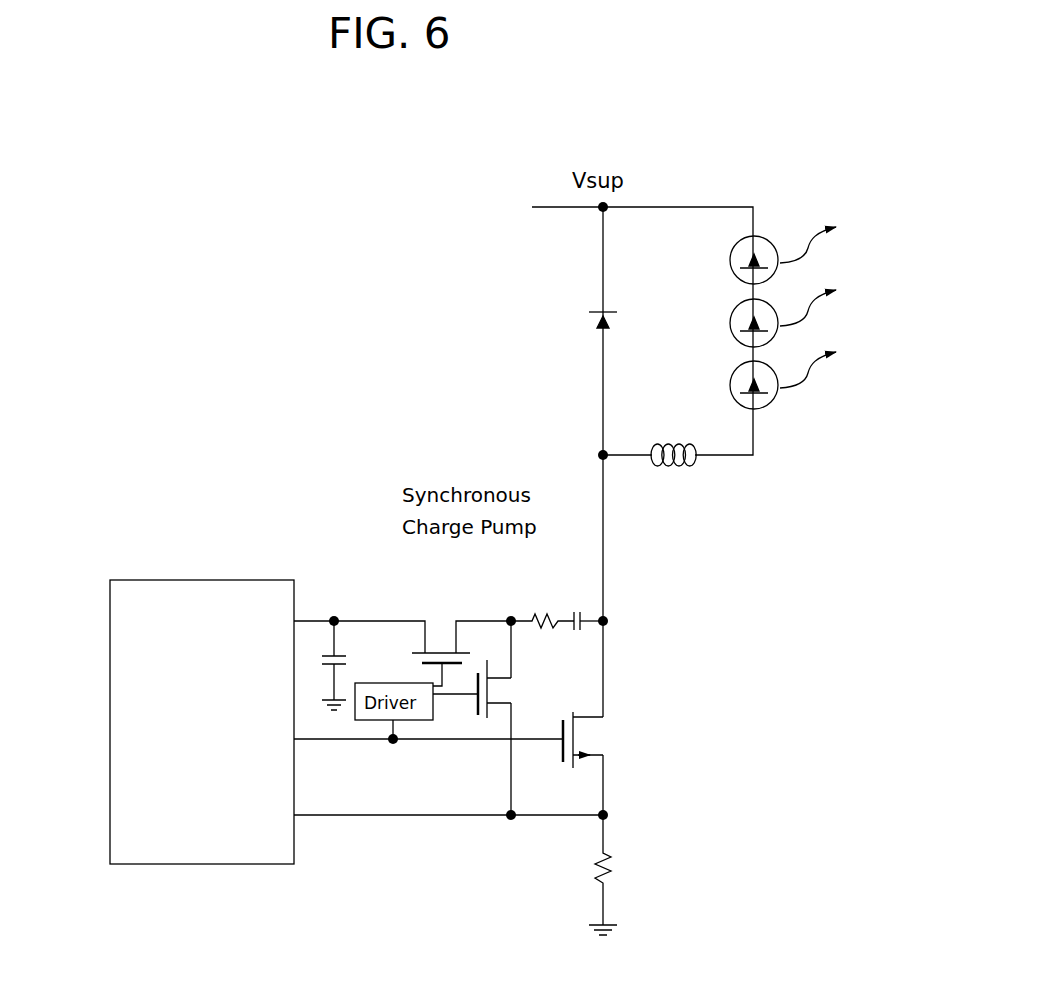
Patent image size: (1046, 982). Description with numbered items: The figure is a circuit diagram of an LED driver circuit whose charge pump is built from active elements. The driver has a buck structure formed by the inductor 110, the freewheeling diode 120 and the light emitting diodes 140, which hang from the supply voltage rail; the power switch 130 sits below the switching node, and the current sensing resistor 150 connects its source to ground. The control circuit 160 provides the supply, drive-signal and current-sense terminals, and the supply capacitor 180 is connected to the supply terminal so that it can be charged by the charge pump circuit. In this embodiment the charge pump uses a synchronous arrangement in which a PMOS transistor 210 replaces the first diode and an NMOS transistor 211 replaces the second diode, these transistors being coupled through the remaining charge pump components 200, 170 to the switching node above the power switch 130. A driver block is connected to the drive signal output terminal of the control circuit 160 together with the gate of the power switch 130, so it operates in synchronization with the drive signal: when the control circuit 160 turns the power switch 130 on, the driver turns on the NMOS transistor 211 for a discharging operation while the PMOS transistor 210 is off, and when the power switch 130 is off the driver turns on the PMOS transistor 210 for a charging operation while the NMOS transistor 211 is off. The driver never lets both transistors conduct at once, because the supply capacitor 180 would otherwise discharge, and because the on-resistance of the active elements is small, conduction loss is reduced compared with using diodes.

The inductor L 110 is at (686, 470).
The freewheeling diode 120 is at (577, 311).
The power switch MSW 130 is at (601, 738).
The light emitting diodes LEDs 140 is at (843, 224).
The current sensing resistor Rcs 150 is at (614, 852).
The control circuit 160 is at (110, 720).
The capacitor 170 is at (585, 610).
The VDD capacitor CVDD 180 is at (327, 638).
The resistor 200 is at (543, 612).
The PMOS transistor MD1 210 is at (446, 648).
The NMOS transistor MD2 211 is at (500, 690).